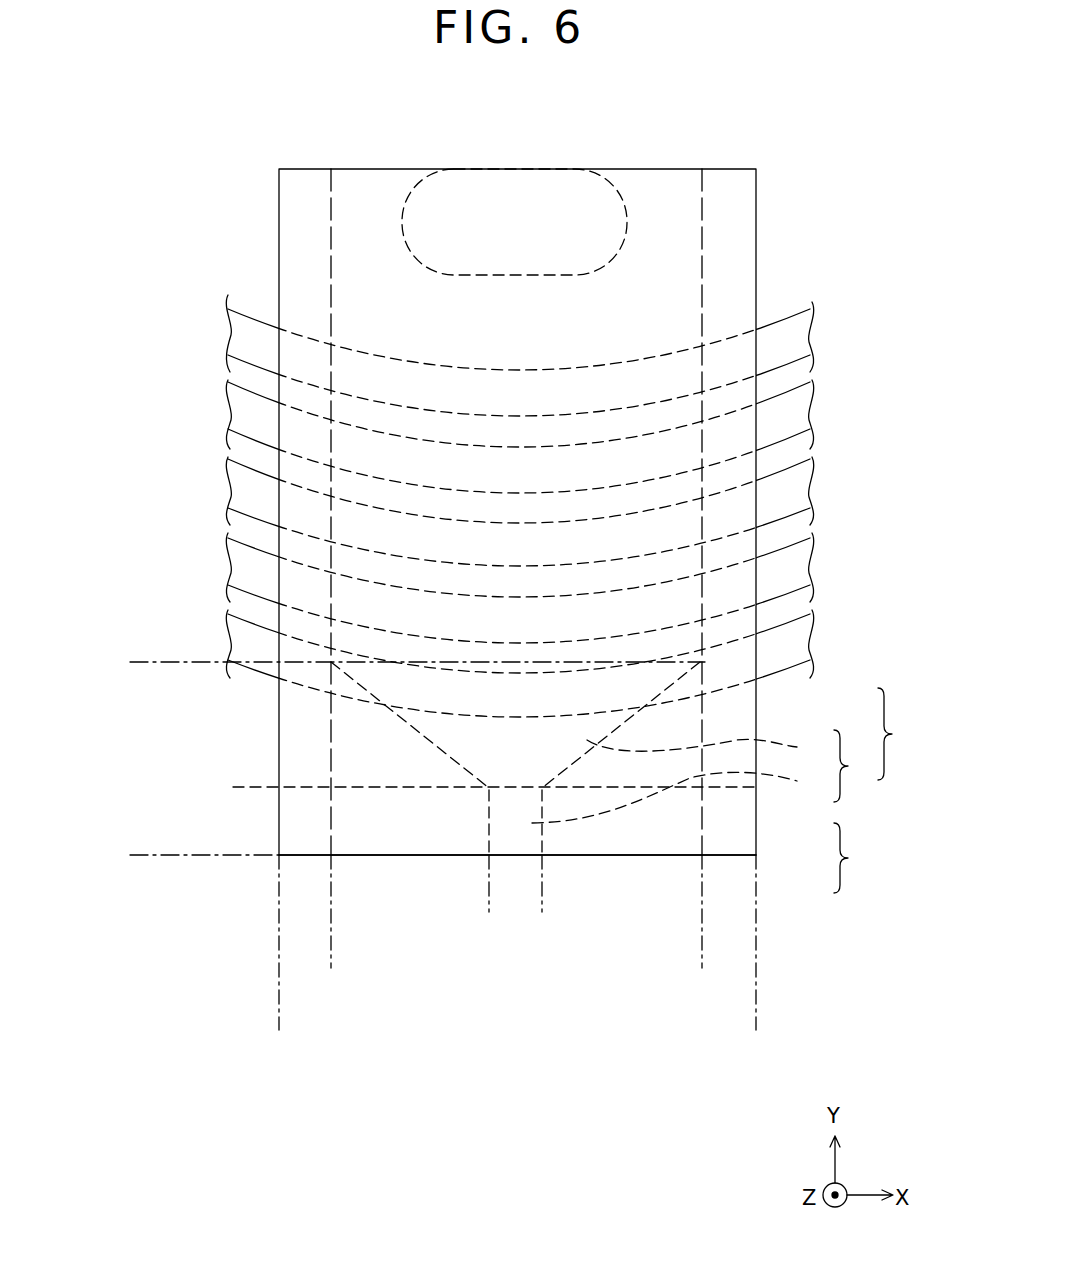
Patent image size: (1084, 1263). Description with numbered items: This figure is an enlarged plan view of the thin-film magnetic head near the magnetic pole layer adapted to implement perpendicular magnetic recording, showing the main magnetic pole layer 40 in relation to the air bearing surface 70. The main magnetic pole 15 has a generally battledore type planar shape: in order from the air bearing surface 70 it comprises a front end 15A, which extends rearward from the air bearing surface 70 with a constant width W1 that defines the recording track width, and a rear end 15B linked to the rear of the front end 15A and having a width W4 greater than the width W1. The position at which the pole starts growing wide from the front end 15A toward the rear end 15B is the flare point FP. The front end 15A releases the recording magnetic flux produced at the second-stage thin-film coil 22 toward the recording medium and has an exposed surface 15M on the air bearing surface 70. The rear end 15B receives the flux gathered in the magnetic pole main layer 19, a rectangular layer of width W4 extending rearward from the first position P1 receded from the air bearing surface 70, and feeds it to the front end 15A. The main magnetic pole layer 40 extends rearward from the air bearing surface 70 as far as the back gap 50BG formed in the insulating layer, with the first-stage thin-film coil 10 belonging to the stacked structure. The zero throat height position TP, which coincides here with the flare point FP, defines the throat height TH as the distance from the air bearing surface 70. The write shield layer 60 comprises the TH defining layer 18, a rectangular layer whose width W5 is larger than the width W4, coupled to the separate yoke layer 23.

The back gap 50BG is at (437, 206).
The first-stage thin-film coil 10 is at (248, 330).
The second-stage thin-film coil 22 is at (499, 465).
The magnetic pole main layer 19 is at (690, 632).
The main magnetic pole layer 40 is at (904, 734).
The main magnetic pole 15 is at (859, 766).
The rear end 15B is at (714, 751).
The front end 15A is at (687, 797).
The exposed surface 15M is at (527, 857).
The TH defining layer 18 is at (740, 807).
The yoke layer 23 is at (740, 835).
The write shield layer 60 is at (860, 858).
The air bearing surface 70 is at (397, 858).
The first position P1 is at (110, 668).
The zero throat height position TP is at (186, 718).
The flare point FP is at (210, 792).
The throat height TH is at (255, 788).
The width W1 is at (532, 907).
The width W4 is at (691, 962).
The width W5 is at (745, 1020).